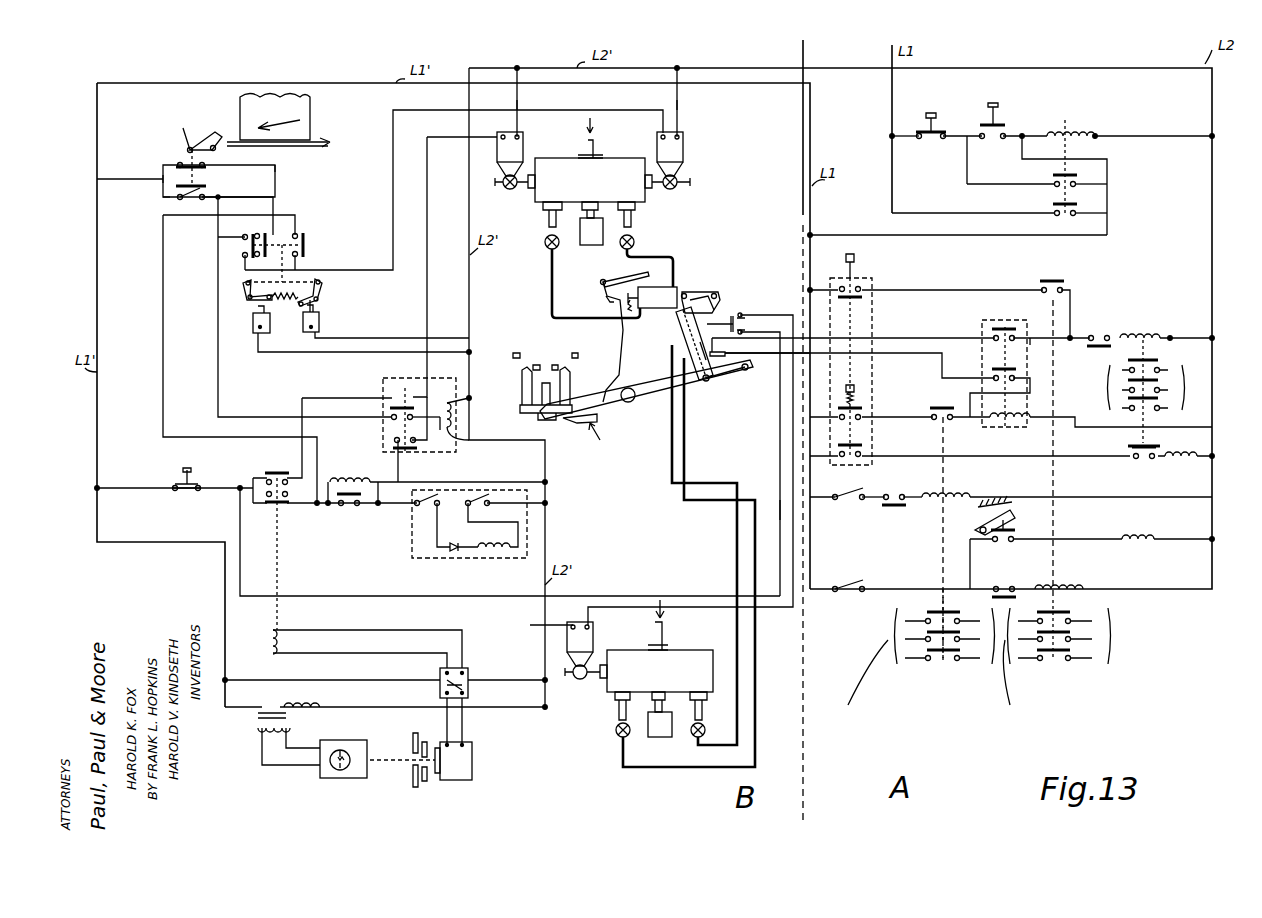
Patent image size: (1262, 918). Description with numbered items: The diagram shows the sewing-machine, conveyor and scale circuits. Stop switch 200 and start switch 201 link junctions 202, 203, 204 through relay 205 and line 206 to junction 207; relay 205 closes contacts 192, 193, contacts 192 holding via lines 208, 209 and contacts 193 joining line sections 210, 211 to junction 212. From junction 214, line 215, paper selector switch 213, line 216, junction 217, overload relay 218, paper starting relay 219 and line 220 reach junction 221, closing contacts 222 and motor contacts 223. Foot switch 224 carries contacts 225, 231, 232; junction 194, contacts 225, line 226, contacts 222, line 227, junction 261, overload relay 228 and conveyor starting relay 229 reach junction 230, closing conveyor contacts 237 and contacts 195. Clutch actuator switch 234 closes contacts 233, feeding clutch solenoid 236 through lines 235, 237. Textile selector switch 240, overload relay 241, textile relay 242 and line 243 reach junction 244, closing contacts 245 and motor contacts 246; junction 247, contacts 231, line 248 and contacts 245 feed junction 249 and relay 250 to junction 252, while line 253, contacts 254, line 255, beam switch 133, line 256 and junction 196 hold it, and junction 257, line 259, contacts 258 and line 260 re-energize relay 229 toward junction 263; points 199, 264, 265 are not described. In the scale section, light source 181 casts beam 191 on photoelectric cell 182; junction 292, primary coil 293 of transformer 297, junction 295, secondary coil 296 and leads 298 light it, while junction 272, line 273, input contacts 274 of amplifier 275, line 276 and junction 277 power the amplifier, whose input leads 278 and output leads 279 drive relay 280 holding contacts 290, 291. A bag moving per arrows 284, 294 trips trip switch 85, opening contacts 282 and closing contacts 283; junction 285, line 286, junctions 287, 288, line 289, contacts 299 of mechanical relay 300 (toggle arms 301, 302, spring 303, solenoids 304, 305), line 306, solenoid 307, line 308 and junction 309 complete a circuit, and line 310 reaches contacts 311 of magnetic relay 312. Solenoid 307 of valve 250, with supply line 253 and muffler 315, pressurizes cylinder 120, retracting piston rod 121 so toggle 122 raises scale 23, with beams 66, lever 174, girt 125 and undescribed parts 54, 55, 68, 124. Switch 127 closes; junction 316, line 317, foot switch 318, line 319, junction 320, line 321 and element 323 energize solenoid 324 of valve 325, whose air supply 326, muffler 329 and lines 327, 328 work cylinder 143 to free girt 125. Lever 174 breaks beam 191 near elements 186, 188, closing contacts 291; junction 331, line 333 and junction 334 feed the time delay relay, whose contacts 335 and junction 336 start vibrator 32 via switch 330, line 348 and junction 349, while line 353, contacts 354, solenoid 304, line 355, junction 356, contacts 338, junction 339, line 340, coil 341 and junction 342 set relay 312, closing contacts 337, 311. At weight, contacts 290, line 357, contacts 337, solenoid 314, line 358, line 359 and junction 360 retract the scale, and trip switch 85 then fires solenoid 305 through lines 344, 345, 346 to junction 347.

The scale 23 is at (601, 440).
The vibrator 32 is at (471, 522).
The base block 54 is at (536, 416).
The lever 55 is at (617, 348).
The scale beams 66 is at (640, 392).
The roller 68 is at (630, 402).
The mechanical trip switch 85 is at (190, 150).
The cylinder 120 is at (652, 299).
The piston rod 121 is at (700, 292).
The toggle 122 is at (710, 292).
The air cylinder 124 is at (677, 337).
The girt 125 is at (688, 400).
The switch 127 is at (722, 320).
The beam switch 133 is at (722, 360).
The cylinder 143 is at (683, 351).
The scale beam lever 174 is at (745, 367).
The light source 181 is at (317, 782).
The photoelectric cell 182 is at (480, 769).
The slot plate 186 is at (413, 740).
The slot 188 is at (422, 748).
The light beam 191 is at (378, 752).
The relay contacts 192 is at (1078, 186).
The relay contacts 193 is at (1075, 215).
The junction 194 is at (810, 290).
The contacts 195 is at (1168, 462).
The junction 196 is at (868, 347).
The line L2 199 is at (1212, 68).
The stop switch 200 is at (933, 114).
The start switch 201 is at (998, 105).
The junction 202 is at (892, 138).
The junction 203 is at (967, 135).
The junction 204 is at (1025, 134).
The relay 205 is at (1075, 130).
The line 206 is at (1148, 134).
The junction 207 is at (1212, 136).
The line 208 is at (1000, 184).
The line 209 is at (1107, 166).
The line section 210 is at (925, 213).
The line section 211 is at (988, 237).
The junction 212 is at (812, 233).
The paper sewing machine selector switch 213 is at (848, 586).
The junction 214 is at (818, 500).
The line 215 is at (812, 572).
The line 216 is at (888, 589).
The junction 217 is at (970, 585).
The overload relay 218 is at (1000, 589).
The paper sewing machine starting relay 219 is at (1045, 585).
The line 220 is at (1165, 589).
The junction 221 is at (1212, 539).
The contacts 222 is at (1055, 281).
The motor contacts 223 is at (1055, 664).
The foot switch 224 is at (854, 255).
The foot switch contacts 225 is at (862, 293).
The line 226 is at (938, 291).
The line 227 is at (1072, 312).
The overload relay 228 is at (1098, 347).
The conveyor starting relay 229 is at (1155, 335).
The junction 230 is at (1212, 338).
The foot switch contacts 231 is at (862, 419).
The foot switch contacts 232 is at (862, 458).
The contacts 233 is at (1000, 543).
The paper sewing machine clutch actuator switch 234 is at (978, 514).
The line 235 is at (1082, 537).
The clutch solenoid 236 is at (1138, 542).
The conveyor motor contacts 237 is at (1160, 362).
The textile sewing machine selector switch 240 is at (855, 490).
The overload relay 241 is at (898, 492).
The textile relay 242 is at (812, 462).
The line 243 is at (1070, 497).
The junction 244 is at (1212, 497).
The textile starter contacts 245 is at (945, 406).
The motor contacts 246 is at (940, 664).
The junction 247 is at (810, 427).
The line 248 is at (905, 417).
The junction 249 is at (972, 420).
The relay 250 is at (1000, 430).
The junction 252 is at (551, 276).
The line 253 is at (597, 147).
The contacts 254 is at (993, 374).
The line 255 is at (915, 353).
The line 256 is at (765, 316).
The junction 257 is at (812, 338).
The contacts 258 is at (1005, 328).
The line 259 is at (918, 338).
The line 260 is at (1036, 345).
The junction 261 is at (1075, 335).
The junction 263 is at (1212, 456).
The conductor 264 is at (1015, 458).
The textile clutch solenoid coil 265 is at (1195, 438).
The junction 272 is at (223, 680).
The line 273 is at (338, 680).
The input contacts 274 is at (475, 661).
The photoelectric cell amplifier 275 is at (462, 680).
The line 276 is at (492, 684).
The junction 277 is at (547, 682).
The input leads 278 is at (468, 718).
The output leads 279 is at (378, 630).
The photoelectric cell relay 280 is at (270, 642).
The trip switch contacts 282 is at (185, 163).
The trip switch contacts 283 is at (190, 200).
The arrow 284 is at (300, 120).
The junction 285 is at (95, 179).
The line 286 is at (160, 181).
The junction 287 is at (163, 197).
The junction 288 is at (220, 196).
The line 289 is at (262, 226).
The normally closed contacts 290 is at (280, 472).
The normally open contacts 291 is at (272, 507).
The junction 292 is at (264, 721).
The primary coil 293 is at (280, 698).
The arrow 294 is at (360, 707).
The junction 295 is at (545, 710).
The secondary coil 296 is at (289, 746).
The light source transformer 297 is at (253, 724).
The leads 298 is at (300, 763).
The normally closed contacts 299 is at (243, 240).
The mechanical relay 300 is at (280, 305).
The toggle arm 301 is at (322, 294).
The toggle arm 302 is at (243, 296).
The spring 303 is at (286, 305).
The solenoid 304 is at (319, 327).
The solenoid 305 is at (253, 320).
The line 306 is at (393, 162).
The solenoid 307 is at (683, 142).
The line 308 is at (680, 101).
The junction 309 is at (677, 66).
The line 310 is at (218, 354).
The normally open contacts 311 is at (392, 418).
The magnetic relay 312 is at (428, 420).
The solenoid 314 is at (505, 152).
The exhaust muffler 315 is at (590, 245).
The junction 316 is at (95, 488).
The line 317 is at (118, 490).
The foot switch 318 is at (178, 493).
The line 319 is at (219, 492).
The junction 320 is at (242, 487).
The line 321 is at (252, 554).
The conductor 323 is at (538, 625).
The solenoid 324 is at (590, 637).
The differential valve 325 is at (656, 693).
The air supply line 326 is at (670, 634).
The air line 327 is at (755, 670).
The air line 328 is at (755, 718).
The exhaust muffler 329 is at (655, 737).
The double pole switch 330 is at (468, 497).
The junction 331 is at (316, 506).
The line 333 is at (424, 482).
The junction 334 is at (547, 480).
The time delay contacts 335 is at (349, 506).
The junction 336 is at (378, 508).
The contacts 337 is at (276, 232).
The normally closed contacts 338 is at (394, 444).
The junction 339 is at (412, 444).
The line 340 is at (452, 438).
The coil 341 is at (455, 415).
The junction 342 is at (470, 397).
The line 344 is at (275, 171).
The line 345 is at (247, 282).
The line 346 is at (308, 352).
The junction 347 is at (470, 352).
The line 348 is at (545, 497).
The junction 349 is at (547, 504).
The line 353 is at (163, 352).
The contacts 354 is at (298, 235).
The line 355 is at (393, 338).
The junction 356 is at (425, 377).
The line 357 is at (302, 405).
The line 358 is at (469, 219).
The line 359 is at (519, 101).
The junction 360 is at (517, 66).